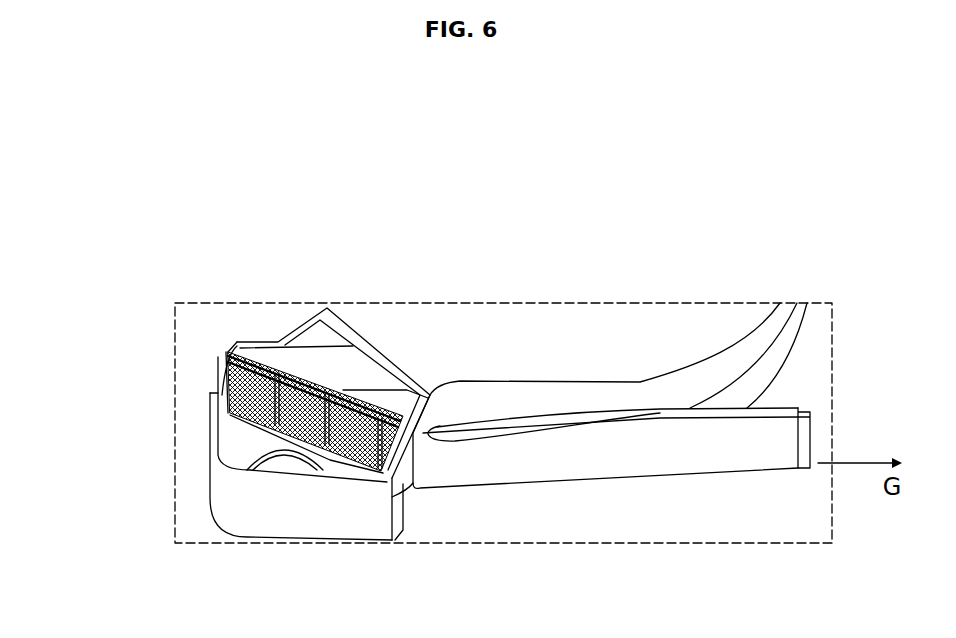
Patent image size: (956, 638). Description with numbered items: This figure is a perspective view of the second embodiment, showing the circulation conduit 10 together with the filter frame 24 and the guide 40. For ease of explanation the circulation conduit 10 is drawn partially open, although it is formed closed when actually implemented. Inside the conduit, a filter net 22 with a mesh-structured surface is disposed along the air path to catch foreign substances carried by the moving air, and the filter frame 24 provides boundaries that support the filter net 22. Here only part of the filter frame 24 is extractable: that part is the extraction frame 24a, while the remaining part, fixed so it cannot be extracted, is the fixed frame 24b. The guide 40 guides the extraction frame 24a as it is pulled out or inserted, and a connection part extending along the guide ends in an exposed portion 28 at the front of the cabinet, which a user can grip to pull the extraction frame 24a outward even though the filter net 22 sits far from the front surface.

The circulation conduit 10 is at (639, 311).
The filter net 22 is at (237, 347).
The filter frame 24 is at (42, 337).
The extraction frame 24a is at (217, 386).
The fixed frame 24b is at (218, 353).
The exposed portion 28 is at (810, 425).
The guide 40 is at (530, 467).